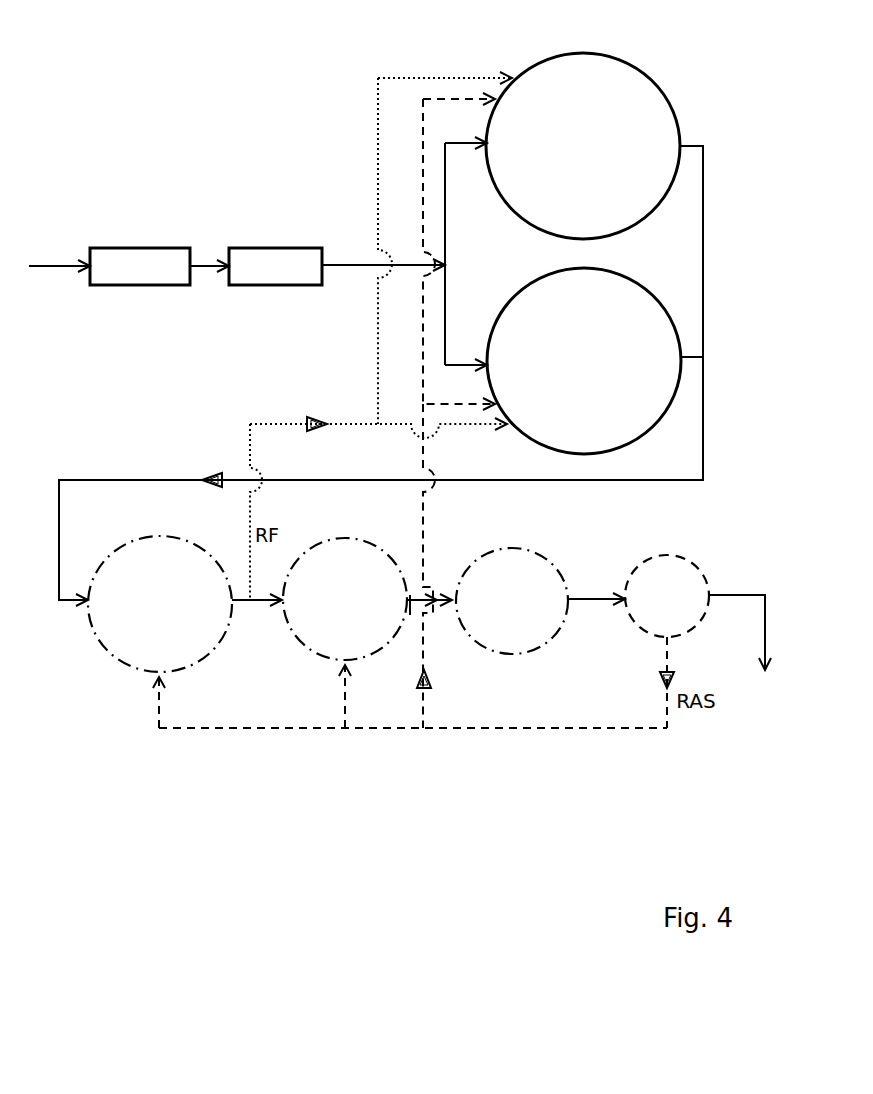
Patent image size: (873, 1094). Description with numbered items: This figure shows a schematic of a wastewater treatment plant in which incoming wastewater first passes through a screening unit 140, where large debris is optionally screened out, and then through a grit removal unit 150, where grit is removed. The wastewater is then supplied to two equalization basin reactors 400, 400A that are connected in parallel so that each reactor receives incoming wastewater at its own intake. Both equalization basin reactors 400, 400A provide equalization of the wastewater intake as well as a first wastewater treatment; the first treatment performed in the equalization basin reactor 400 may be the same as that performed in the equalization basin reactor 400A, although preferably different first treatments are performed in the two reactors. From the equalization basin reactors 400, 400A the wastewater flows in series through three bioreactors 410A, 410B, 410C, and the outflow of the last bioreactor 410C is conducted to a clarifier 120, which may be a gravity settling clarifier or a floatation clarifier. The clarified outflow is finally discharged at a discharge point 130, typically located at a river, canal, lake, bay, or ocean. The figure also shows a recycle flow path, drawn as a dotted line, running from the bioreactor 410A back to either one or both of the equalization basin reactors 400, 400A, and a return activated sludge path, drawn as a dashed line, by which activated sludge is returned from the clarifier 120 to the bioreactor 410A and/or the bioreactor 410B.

The screening unit 140 is at (140, 266).
The grit removal unit 150 is at (275, 266).
The equalization basin reactor 400 is at (583, 146).
The equalization basin reactor 400A is at (584, 361).
The bioreactor 410A is at (160, 604).
The bioreactor 410B is at (345, 599).
The bioreactor 410C is at (512, 601).
The clarifier 120 is at (667, 596).
The discharge point 130 is at (747, 654).